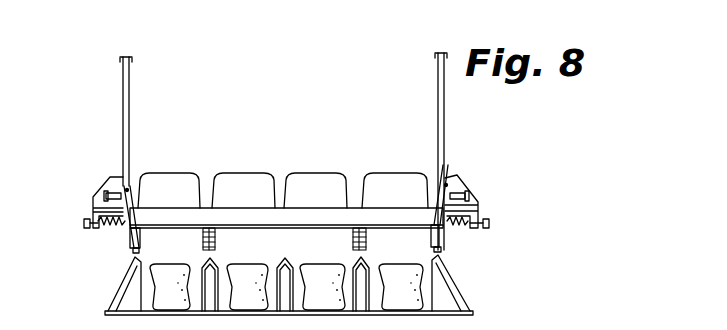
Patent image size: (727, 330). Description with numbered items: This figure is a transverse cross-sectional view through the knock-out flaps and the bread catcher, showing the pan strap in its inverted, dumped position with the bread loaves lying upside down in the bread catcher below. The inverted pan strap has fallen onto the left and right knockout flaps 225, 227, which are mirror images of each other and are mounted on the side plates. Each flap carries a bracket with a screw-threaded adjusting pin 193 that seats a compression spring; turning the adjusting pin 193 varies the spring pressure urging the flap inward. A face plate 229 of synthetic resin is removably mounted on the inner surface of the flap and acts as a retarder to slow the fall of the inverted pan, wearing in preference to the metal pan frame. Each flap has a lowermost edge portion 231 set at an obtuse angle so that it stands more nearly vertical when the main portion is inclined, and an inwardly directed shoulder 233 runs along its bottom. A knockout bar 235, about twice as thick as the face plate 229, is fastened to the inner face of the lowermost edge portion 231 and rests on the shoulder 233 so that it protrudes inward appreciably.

The adjusting pin 193 is at (84, 232).
The left knockout flap 225 is at (95, 212).
The right knockout flap 227 is at (502, 261).
The face plate 229 is at (125, 200).
The lowermost edge portion 231 is at (130, 237).
The shoulder 233 is at (132, 251).
The knockout bar 235 is at (138, 238).